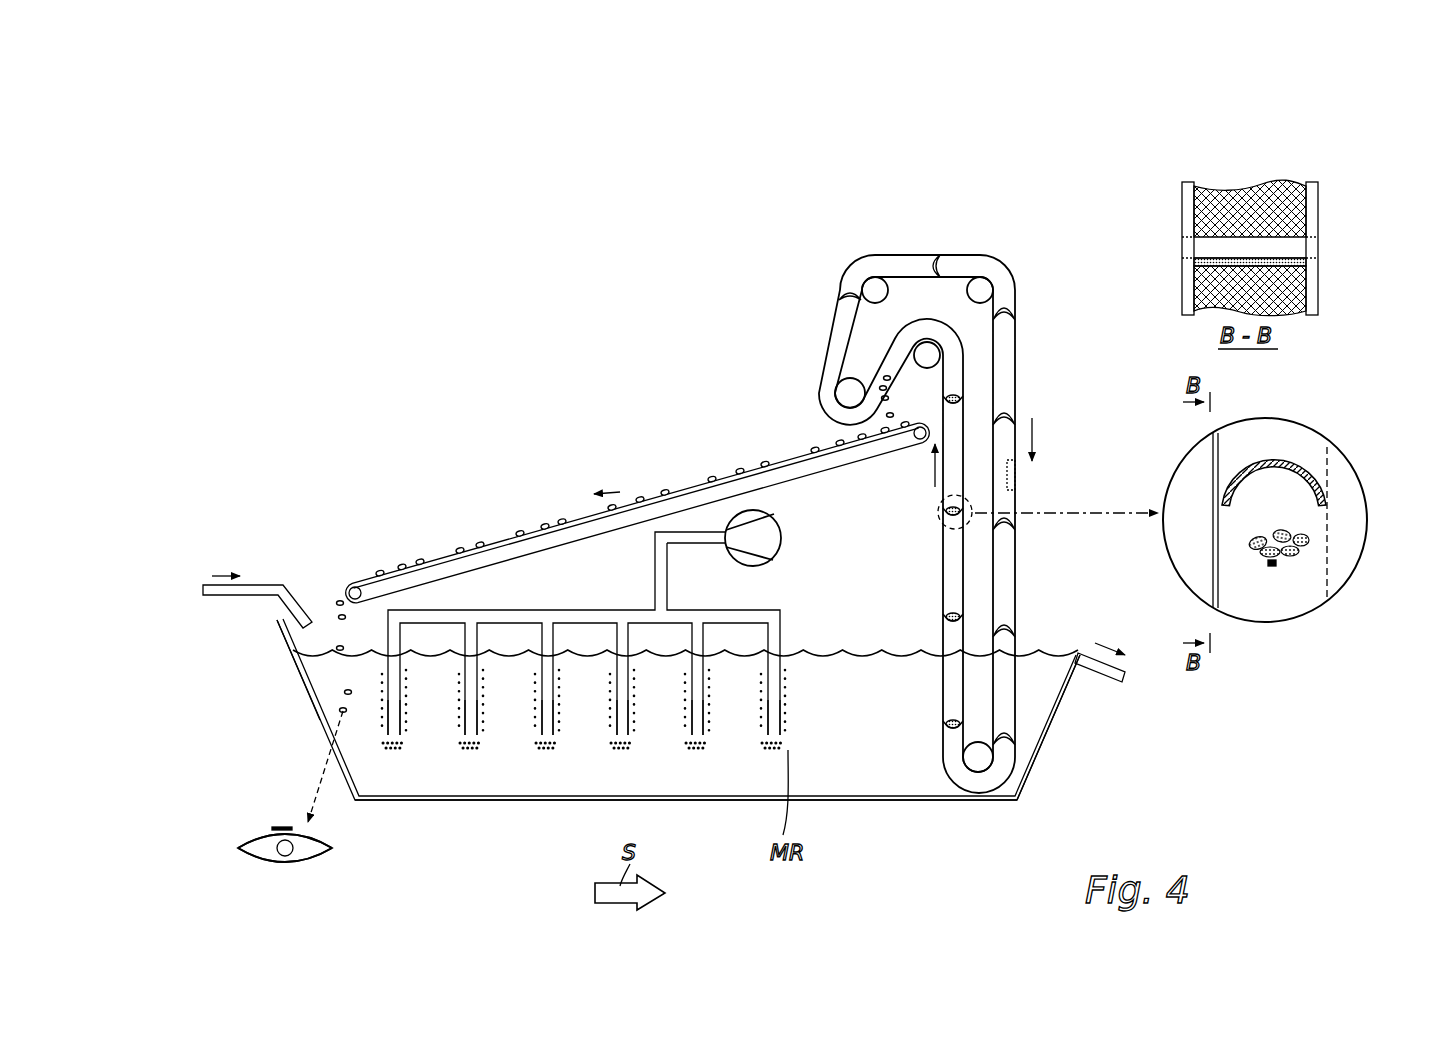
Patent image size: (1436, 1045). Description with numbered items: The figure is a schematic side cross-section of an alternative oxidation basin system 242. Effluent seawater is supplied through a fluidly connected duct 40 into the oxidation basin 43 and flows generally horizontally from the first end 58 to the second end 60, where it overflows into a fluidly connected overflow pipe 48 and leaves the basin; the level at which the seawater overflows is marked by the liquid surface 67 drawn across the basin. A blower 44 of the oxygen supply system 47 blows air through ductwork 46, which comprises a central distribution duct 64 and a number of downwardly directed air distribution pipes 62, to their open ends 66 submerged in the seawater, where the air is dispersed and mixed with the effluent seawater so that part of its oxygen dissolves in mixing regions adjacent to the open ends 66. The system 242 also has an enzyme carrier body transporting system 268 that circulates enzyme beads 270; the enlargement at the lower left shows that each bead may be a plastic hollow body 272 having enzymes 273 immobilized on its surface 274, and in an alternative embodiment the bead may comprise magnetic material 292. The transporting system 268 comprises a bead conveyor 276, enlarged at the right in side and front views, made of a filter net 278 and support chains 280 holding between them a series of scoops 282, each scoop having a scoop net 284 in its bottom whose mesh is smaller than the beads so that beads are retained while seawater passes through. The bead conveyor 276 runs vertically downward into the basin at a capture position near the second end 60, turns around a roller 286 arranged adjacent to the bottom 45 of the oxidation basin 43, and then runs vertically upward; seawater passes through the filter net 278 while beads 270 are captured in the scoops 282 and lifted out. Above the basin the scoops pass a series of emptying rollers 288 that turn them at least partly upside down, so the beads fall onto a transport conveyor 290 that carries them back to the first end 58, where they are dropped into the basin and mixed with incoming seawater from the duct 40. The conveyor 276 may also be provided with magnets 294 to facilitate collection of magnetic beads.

The oxidation basin system 242 is at (430, 382).
The enzyme carrier body transporting system 268 is at (783, 402).
The emptying rollers 288 is at (875, 290).
The transport conveyor 290 is at (633, 499).
The enzyme beads 270 is at (556, 522).
The central distribution duct 64 is at (590, 610).
The blower 44 is at (782, 536).
The oxygen supply system 47 is at (828, 535).
The ductwork 46 is at (611, 694).
The support chains 280 is at (942, 630).
The liquid level 67 is at (1038, 654).
The duct 40 is at (237, 598).
The first end 58 is at (300, 677).
The scoops 282 is at (950, 728).
The overflow pipe 48 is at (1100, 670).
The second end 60 is at (1036, 760).
The filter net 278 is at (1063, 490).
The roller 286 is at (980, 758).
The enzymes 273 is at (281, 827).
The plastic hollow bodies 272 is at (332, 846).
The surface 274 is at (262, 860).
The magnetic material 292 is at (290, 852).
The oxidation basin 43 is at (480, 801).
The air distribution pipes 62 is at (763, 717).
The open ends 66 is at (770, 747).
The bottom 45 is at (912, 798).
The bead conveyor 276 is at (1080, 490).
The magnets 294 is at (1015, 478).
The scoop net 284 is at (1272, 566).